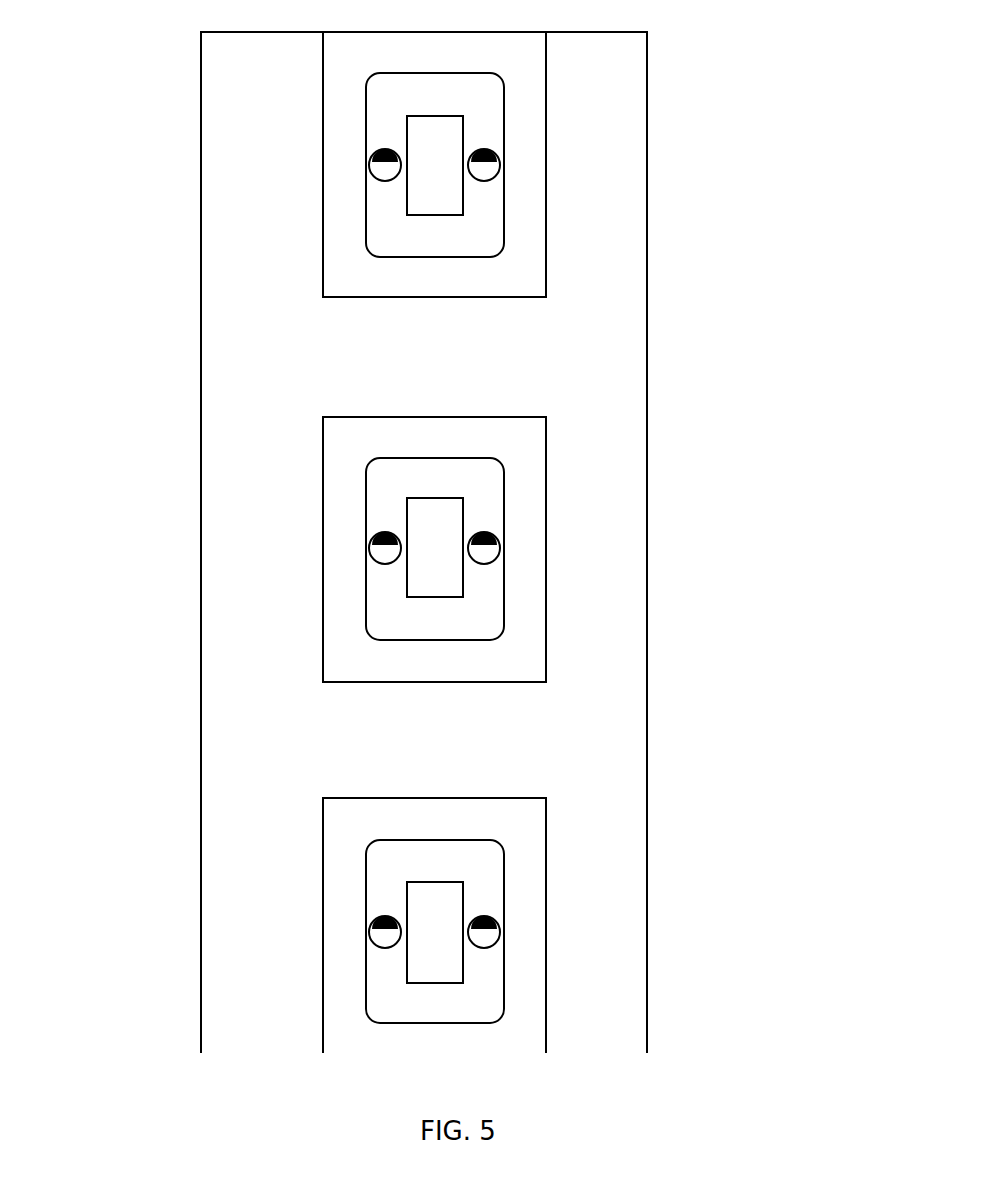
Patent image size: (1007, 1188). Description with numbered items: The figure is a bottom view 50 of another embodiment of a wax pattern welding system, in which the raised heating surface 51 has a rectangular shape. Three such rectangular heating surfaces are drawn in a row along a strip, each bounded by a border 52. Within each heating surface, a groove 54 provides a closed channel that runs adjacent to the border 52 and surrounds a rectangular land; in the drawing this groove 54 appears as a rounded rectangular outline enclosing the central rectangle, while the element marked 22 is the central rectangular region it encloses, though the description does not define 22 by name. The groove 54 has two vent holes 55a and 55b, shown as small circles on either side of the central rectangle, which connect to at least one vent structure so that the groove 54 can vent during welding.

The bottom view 50 is at (612, 101).
The raised heating surface 51 is at (546, 678).
The border 52 is at (518, 450).
The groove 54 is at (470, 614).
The chip / die 22 is at (432, 528).
The vent hole 55a is at (485, 550).
The vent hole 55b is at (378, 548).